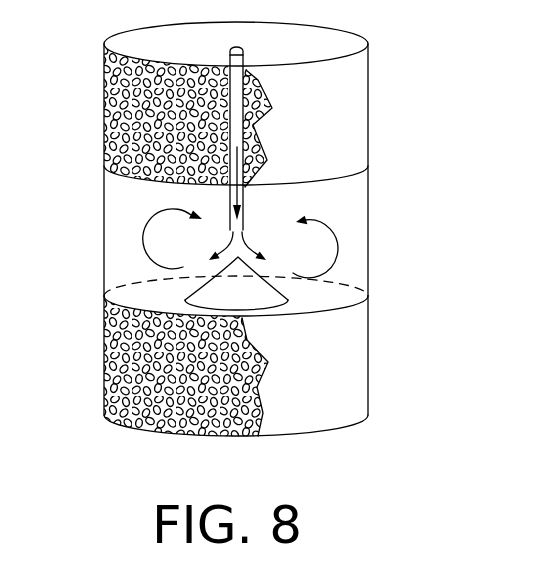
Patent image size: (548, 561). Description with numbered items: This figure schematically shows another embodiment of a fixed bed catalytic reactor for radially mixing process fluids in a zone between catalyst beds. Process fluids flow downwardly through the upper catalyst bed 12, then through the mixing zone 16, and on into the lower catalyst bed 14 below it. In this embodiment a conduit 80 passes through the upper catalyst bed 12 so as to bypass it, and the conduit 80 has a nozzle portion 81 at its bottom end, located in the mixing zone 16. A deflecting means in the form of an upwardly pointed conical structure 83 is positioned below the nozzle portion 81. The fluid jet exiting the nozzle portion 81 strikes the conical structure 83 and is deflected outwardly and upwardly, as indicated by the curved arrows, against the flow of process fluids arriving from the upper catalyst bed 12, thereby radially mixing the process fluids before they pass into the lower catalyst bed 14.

The upper catalyst bed 12 is at (120, 128).
The lower catalyst bed 14 is at (112, 368).
The mixing zone 16 is at (118, 226).
The conduit 80 is at (233, 85).
The nozzle portion 81 is at (243, 224).
The conical structure 83 is at (255, 292).